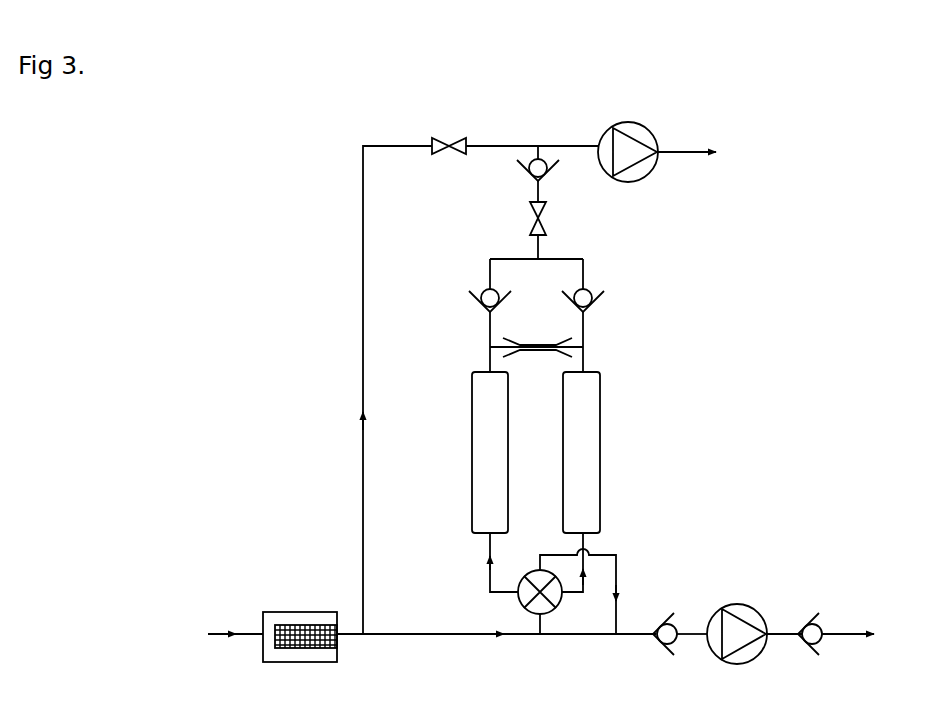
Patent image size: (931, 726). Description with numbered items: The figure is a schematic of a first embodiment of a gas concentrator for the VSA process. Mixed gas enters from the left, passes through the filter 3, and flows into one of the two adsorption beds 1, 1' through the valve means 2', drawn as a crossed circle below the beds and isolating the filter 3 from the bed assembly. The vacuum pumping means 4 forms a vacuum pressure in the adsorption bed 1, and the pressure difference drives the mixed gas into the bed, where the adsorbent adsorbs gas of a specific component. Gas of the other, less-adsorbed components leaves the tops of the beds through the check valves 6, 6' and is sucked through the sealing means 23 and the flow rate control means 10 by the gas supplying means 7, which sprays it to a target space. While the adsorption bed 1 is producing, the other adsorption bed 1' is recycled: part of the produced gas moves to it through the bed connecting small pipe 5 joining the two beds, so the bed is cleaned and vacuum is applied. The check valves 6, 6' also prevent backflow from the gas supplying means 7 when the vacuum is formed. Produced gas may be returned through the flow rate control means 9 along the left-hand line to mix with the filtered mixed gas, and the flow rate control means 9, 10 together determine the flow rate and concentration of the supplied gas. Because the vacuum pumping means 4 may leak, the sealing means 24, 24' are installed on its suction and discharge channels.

The adsorption bed 1 is at (473, 452).
The adsorption bed 1' is at (601, 452).
The valve means 2' is at (554, 602).
The filter 3 is at (305, 612).
The vacuum pumping means 4 is at (757, 658).
The bed connecting small pipe 5 is at (535, 341).
The check valve 6 is at (480, 287).
The check valve 6' is at (589, 282).
The gas supplying means 7 is at (648, 175).
The flow rate control means 9 is at (448, 139).
The flow rate control means 10 is at (530, 228).
The sealing means 23 is at (518, 168).
The sealing means 24 is at (666, 616).
The sealing means 24' is at (813, 616).